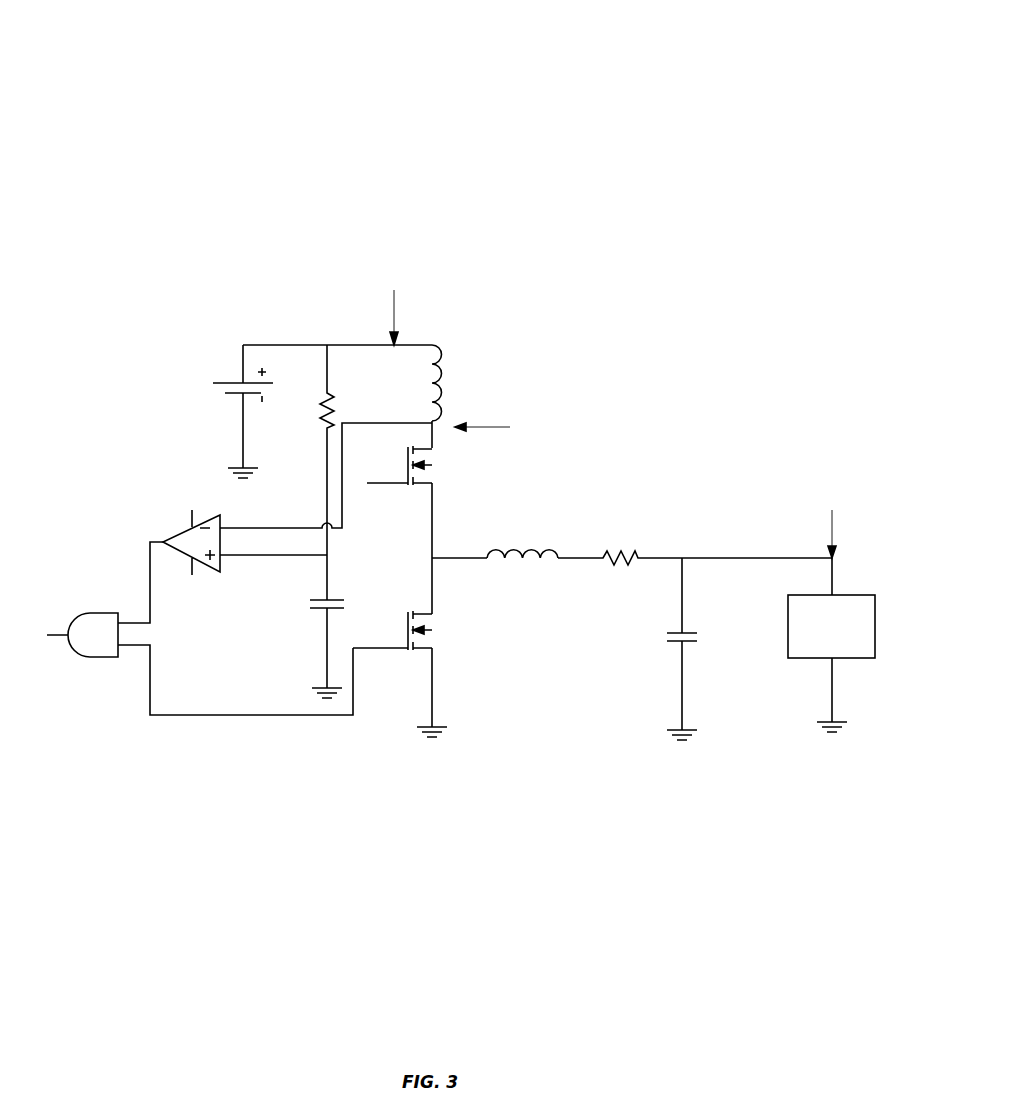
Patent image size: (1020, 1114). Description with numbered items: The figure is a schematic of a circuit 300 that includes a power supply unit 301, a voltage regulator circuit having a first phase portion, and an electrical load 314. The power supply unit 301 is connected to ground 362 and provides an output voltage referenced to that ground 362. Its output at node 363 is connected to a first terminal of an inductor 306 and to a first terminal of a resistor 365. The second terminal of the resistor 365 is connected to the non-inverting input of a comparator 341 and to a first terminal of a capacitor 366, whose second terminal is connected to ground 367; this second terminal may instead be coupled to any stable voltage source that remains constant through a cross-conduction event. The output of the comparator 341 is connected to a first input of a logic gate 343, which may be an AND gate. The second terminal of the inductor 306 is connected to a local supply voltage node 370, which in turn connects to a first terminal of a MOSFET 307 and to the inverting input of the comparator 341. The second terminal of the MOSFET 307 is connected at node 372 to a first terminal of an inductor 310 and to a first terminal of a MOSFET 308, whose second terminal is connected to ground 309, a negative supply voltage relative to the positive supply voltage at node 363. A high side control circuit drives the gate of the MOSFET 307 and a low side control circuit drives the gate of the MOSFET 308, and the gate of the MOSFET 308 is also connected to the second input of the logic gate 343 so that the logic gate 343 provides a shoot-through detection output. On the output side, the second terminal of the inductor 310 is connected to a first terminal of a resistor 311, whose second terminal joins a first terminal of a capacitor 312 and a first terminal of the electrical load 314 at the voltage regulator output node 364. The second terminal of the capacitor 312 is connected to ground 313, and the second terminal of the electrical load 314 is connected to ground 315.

The circuit 300 is at (824, 70).
The power supply unit 301 is at (228, 380).
The inductor 306 is at (445, 347).
The MOSFET 307 is at (436, 468).
The MOSFET 308 is at (438, 631).
The ground 309 is at (436, 718).
The inductor 310 is at (550, 540).
The resistor 311 is at (633, 548).
The capacitor 312 is at (675, 630).
The ground 313 is at (672, 728).
The electrical load 314 is at (786, 620).
The ground 315 is at (825, 720).
The comparator 341 is at (210, 516).
The logic gate 343 is at (93, 655).
The ground 362 is at (235, 462).
The node 363 is at (396, 313).
The voltage regulator output node 364 is at (828, 525).
The resistor 365 is at (327, 395).
The capacitor 366 is at (330, 598).
The ground 367 is at (322, 683).
The local supply voltage node 370 is at (436, 425).
The node 372 is at (450, 560).